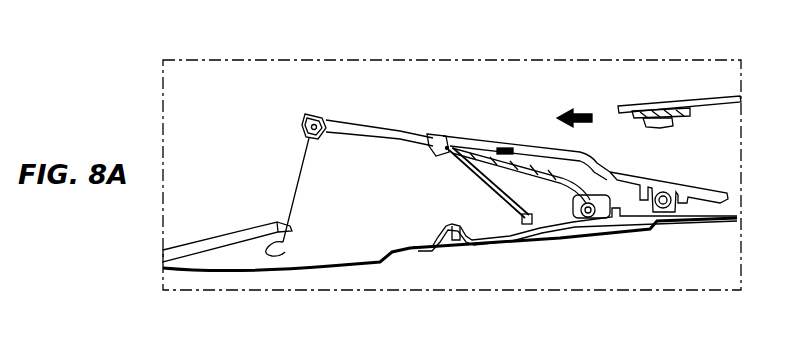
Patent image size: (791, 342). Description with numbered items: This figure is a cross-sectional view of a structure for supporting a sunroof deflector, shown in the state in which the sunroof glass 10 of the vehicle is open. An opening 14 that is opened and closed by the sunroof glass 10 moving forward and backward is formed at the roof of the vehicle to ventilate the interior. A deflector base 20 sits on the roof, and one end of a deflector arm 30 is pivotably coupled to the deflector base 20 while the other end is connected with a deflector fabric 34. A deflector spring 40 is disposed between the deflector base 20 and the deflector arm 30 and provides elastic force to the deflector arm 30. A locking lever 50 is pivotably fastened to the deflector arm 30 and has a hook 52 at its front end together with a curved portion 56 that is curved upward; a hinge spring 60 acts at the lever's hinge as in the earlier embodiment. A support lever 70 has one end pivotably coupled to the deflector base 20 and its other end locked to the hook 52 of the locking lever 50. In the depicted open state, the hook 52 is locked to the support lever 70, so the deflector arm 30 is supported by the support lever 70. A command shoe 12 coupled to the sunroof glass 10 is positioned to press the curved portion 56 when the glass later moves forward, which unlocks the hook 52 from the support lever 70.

The sunroof glass 10 is at (697, 98).
The command shoe 12 is at (668, 122).
The opening 14 is at (353, 212).
The deflector base 20 is at (525, 240).
The deflector arm 30 is at (370, 128).
The deflector fabric 34 is at (302, 158).
The deflector spring 40 is at (573, 195).
The locking lever 50 is at (535, 150).
The hook 52 is at (442, 149).
The curved portion 56 is at (580, 155).
The hinge spring 60 is at (499, 149).
The support lever 70 is at (495, 199).